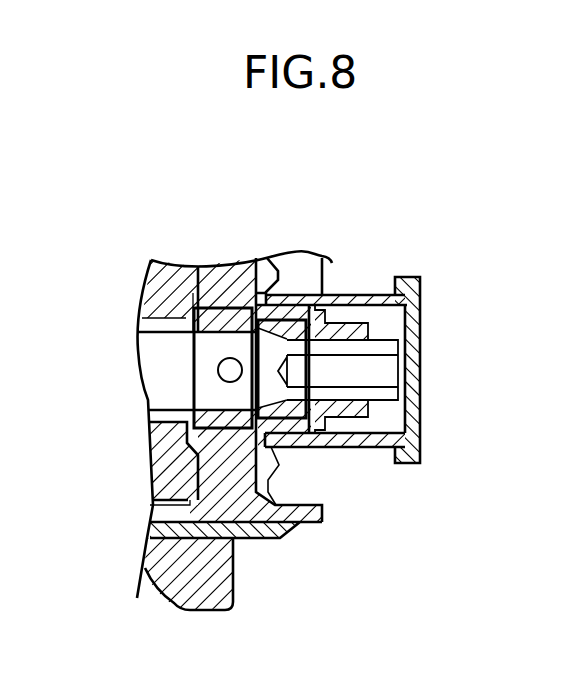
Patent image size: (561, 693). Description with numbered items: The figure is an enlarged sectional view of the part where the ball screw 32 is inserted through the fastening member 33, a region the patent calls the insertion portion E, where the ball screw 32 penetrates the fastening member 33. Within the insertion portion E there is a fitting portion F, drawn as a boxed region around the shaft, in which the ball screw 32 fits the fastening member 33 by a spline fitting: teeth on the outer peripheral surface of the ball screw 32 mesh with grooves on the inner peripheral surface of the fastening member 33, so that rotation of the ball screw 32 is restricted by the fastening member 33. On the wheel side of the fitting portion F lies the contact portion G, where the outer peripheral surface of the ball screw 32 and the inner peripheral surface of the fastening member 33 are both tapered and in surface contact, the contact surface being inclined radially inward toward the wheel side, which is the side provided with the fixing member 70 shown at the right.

The ball screw 32 is at (163, 382).
The fastening member 33 is at (233, 295).
The fixing member 70 is at (393, 320).
The insertion portion E is at (186, 323).
The fitting portion F is at (223, 428).
The contact portion G is at (273, 420).